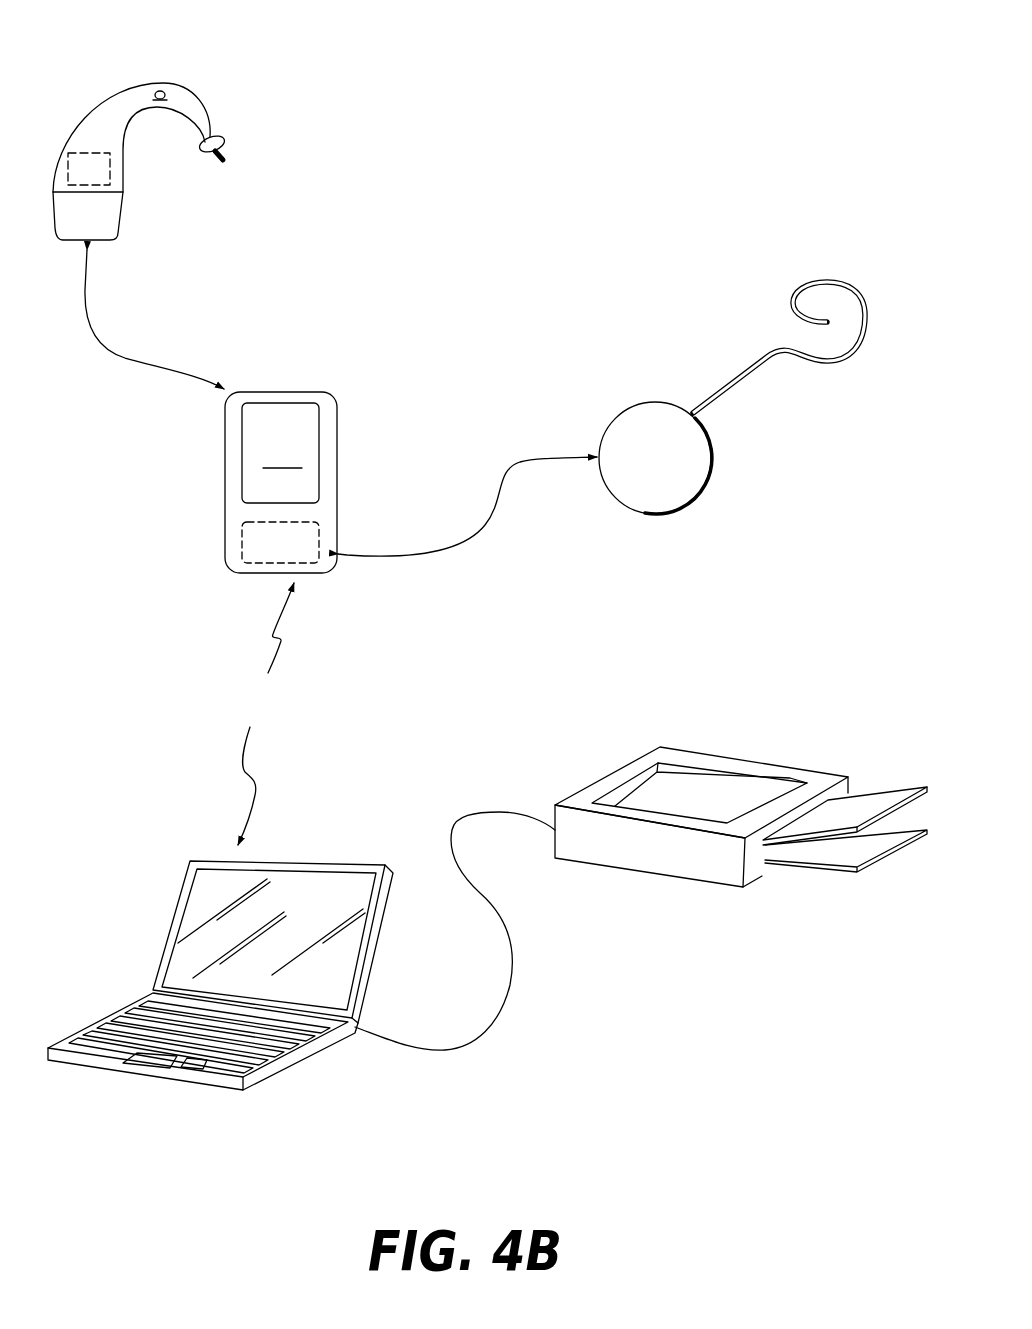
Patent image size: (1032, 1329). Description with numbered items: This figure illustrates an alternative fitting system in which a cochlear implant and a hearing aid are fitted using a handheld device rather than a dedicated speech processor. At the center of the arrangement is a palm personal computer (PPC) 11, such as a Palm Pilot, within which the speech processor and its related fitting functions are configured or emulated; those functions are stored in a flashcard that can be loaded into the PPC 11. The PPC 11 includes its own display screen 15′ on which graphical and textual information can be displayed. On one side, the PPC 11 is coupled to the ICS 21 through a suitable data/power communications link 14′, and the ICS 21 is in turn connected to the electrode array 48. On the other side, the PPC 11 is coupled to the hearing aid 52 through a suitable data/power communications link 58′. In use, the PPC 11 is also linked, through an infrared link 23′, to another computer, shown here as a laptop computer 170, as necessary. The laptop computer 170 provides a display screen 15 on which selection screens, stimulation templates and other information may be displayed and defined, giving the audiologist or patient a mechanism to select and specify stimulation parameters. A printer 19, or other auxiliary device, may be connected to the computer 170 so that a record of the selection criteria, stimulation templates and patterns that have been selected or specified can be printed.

The hearing aid 52 is at (216, 80).
The data/power communications link 58′ is at (123, 358).
The palm personal computer (PPC) 11 is at (225, 460).
The display screen 15′ is at (282, 455).
The data/power communications link 14′ is at (487, 523).
The ICS 21 is at (655, 513).
The electrode array 48 is at (823, 280).
The infrared link 23′ is at (282, 641).
The display screen 15 is at (211, 905).
The laptop computer 170 is at (88, 1027).
The printer 19 is at (662, 873).